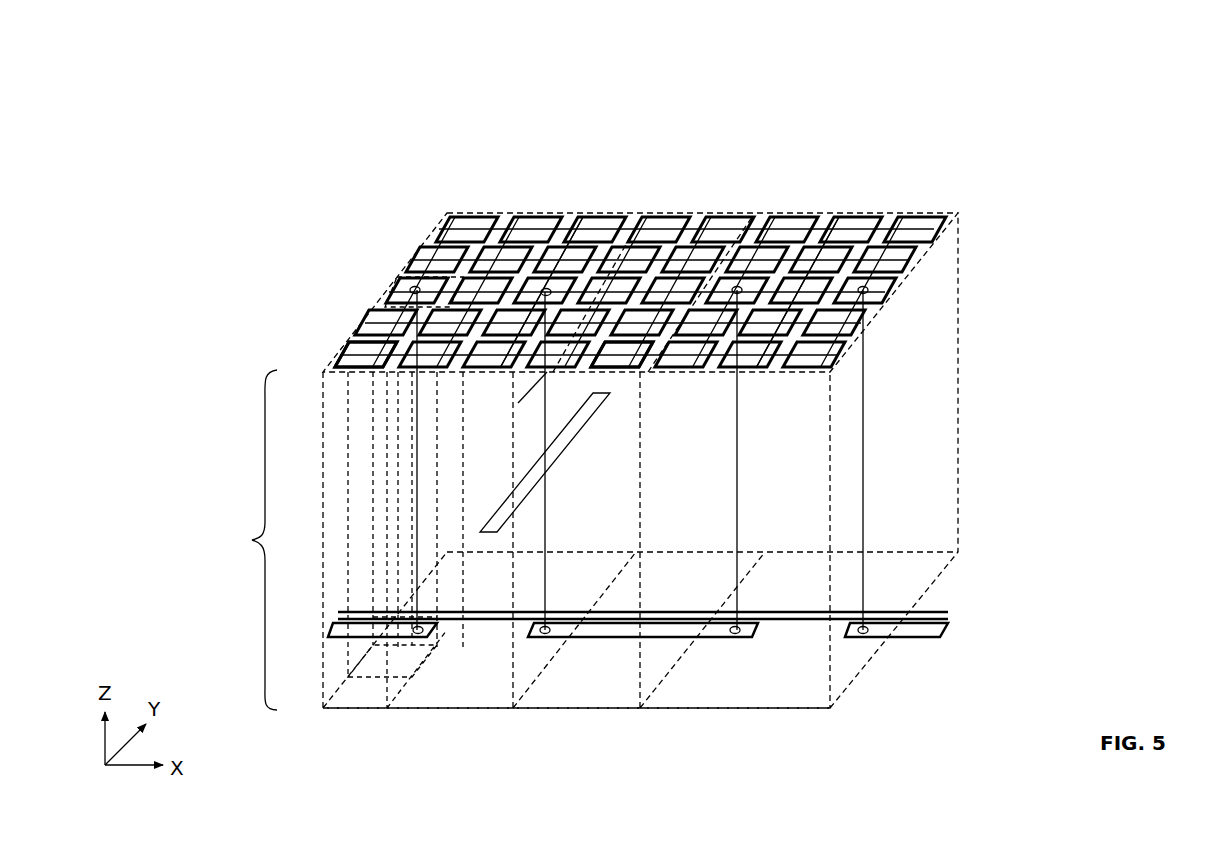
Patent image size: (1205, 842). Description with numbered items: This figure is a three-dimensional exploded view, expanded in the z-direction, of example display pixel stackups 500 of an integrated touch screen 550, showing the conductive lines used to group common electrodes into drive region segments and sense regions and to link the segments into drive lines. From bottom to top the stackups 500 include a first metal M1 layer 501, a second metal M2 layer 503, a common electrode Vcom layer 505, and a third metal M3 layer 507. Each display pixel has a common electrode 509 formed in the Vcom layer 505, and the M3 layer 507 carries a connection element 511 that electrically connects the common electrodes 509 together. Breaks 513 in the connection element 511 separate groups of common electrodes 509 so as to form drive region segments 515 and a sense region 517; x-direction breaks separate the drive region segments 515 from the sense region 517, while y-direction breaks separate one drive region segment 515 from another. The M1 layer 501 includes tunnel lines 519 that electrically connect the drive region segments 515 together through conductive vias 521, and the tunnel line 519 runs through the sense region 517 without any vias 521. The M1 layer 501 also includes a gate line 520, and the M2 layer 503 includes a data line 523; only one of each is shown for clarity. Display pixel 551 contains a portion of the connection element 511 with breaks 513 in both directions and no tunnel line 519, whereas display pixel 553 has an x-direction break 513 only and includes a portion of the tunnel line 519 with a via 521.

The display pixel stackups 500 is at (553, 461).
The first metal (M1) layer 501 is at (980, 619).
The second metal (M2) layer 503 is at (980, 416).
The common electrode (Vcom) layer 505 is at (980, 262).
The third metal (M3) layer 507 is at (980, 235).
The common electrode 509 is at (667, 213).
The connection element 511 is at (890, 215).
The breaks 513 is at (443, 376).
The drive region segment 515 is at (948, 165).
The sense region 517 is at (677, 213).
The tunnel line 519 is at (397, 621).
The gate line 520 is at (935, 616).
The conductive via 521 is at (432, 614).
The data line 523 is at (546, 463).
The integrated touch screen 550 is at (698, 731).
The display pixel 551 is at (352, 355).
The display pixel 553 is at (410, 290).